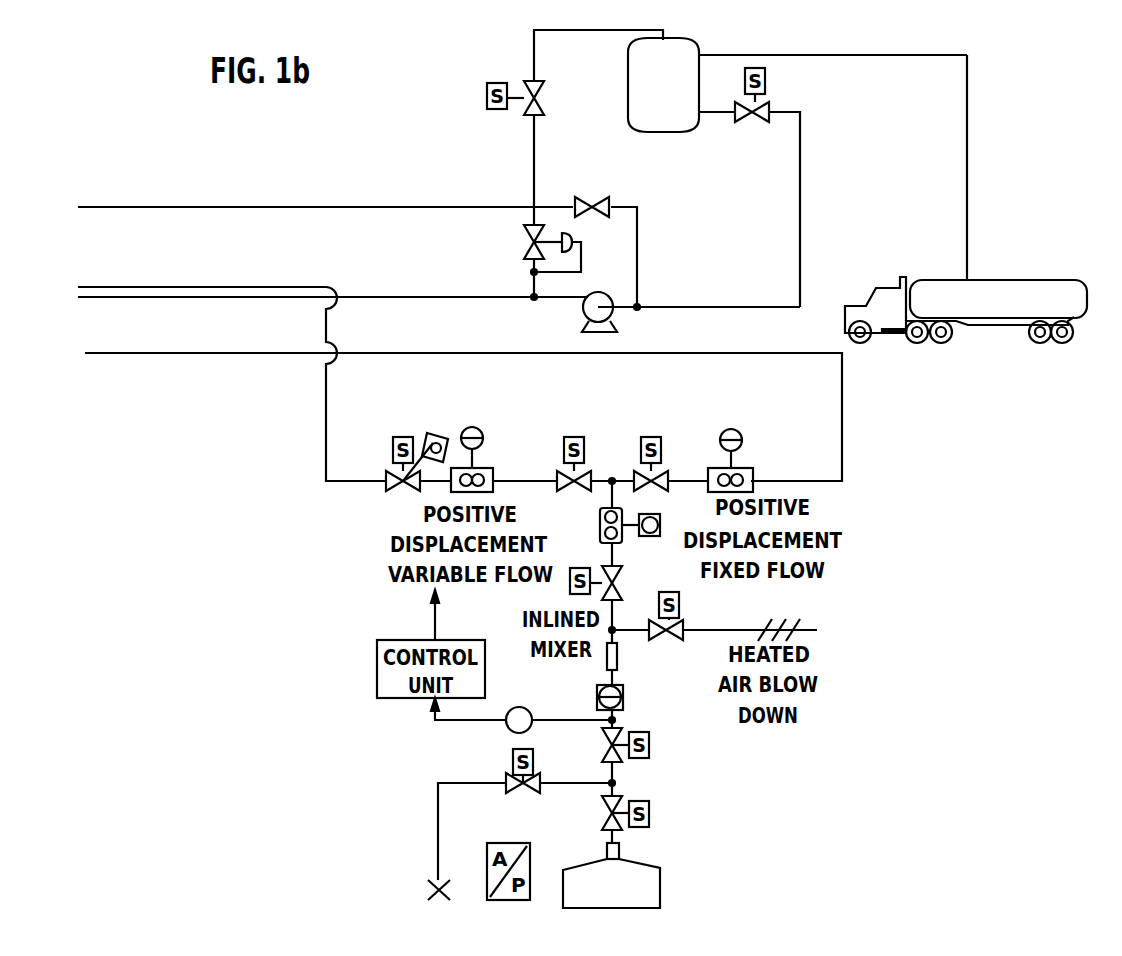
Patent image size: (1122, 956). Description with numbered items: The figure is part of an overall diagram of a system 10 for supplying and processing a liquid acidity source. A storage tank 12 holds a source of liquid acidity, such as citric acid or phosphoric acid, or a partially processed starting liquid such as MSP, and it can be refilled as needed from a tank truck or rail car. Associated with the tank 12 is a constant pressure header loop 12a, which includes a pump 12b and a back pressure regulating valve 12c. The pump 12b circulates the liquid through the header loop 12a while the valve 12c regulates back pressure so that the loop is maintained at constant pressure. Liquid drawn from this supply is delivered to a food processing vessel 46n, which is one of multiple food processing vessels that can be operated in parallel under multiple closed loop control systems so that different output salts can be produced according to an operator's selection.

The system 10 is at (926, 35).
The tank 12 is at (628, 100).
The constant pressure header loop 12a is at (1003, 152).
The pump 12b is at (603, 297).
The back pressure regulating valve 12c is at (524, 226).
The food processing vessel 46n is at (660, 868).